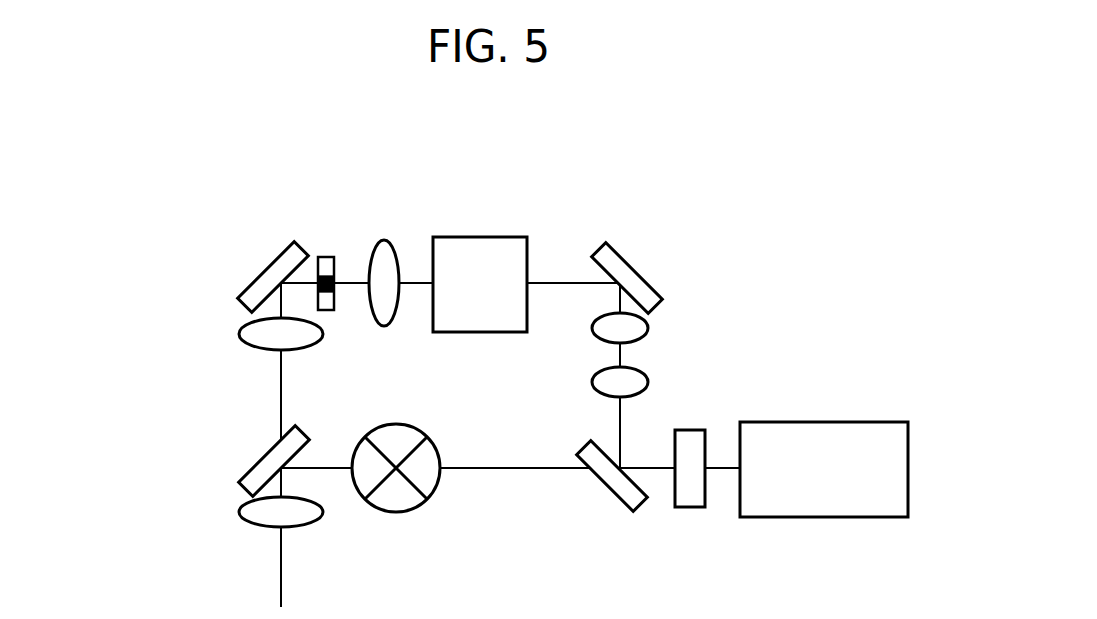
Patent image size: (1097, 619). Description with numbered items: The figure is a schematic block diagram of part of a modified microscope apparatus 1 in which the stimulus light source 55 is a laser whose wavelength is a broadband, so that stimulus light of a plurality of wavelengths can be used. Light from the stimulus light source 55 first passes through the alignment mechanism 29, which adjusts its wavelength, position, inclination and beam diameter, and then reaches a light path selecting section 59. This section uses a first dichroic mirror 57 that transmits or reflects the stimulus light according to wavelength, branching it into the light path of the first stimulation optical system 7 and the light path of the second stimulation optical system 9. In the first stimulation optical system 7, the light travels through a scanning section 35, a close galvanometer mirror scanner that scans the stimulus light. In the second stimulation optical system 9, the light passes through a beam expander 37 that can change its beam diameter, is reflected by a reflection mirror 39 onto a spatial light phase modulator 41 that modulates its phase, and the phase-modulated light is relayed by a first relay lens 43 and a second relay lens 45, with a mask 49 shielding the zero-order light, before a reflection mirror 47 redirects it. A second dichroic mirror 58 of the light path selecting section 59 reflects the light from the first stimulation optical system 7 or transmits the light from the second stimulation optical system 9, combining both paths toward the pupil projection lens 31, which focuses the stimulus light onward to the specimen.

The microscope apparatus 1 is at (842, 163).
The first stimulation optical system 7 is at (478, 440).
The second stimulation optical system 9 is at (560, 210).
The alignment mechanism 29 is at (687, 507).
The pupil projection lens 31 is at (240, 510).
The scanning section 35 is at (393, 513).
The beam expander 37 is at (652, 315).
The reflection mirror 39 is at (642, 273).
The spatial light phase modulator 41 is at (478, 237).
The first relay lens 43 is at (383, 240).
The second relay lens 45 is at (239, 334).
The reflection mirror 47 is at (273, 257).
The mask 49 is at (325, 256).
The stimulus light source 55 is at (820, 422).
The first dichroic mirror 57 is at (618, 506).
The second dichroic mirror 58 is at (248, 470).
The light path selecting section 59 is at (140, 443).